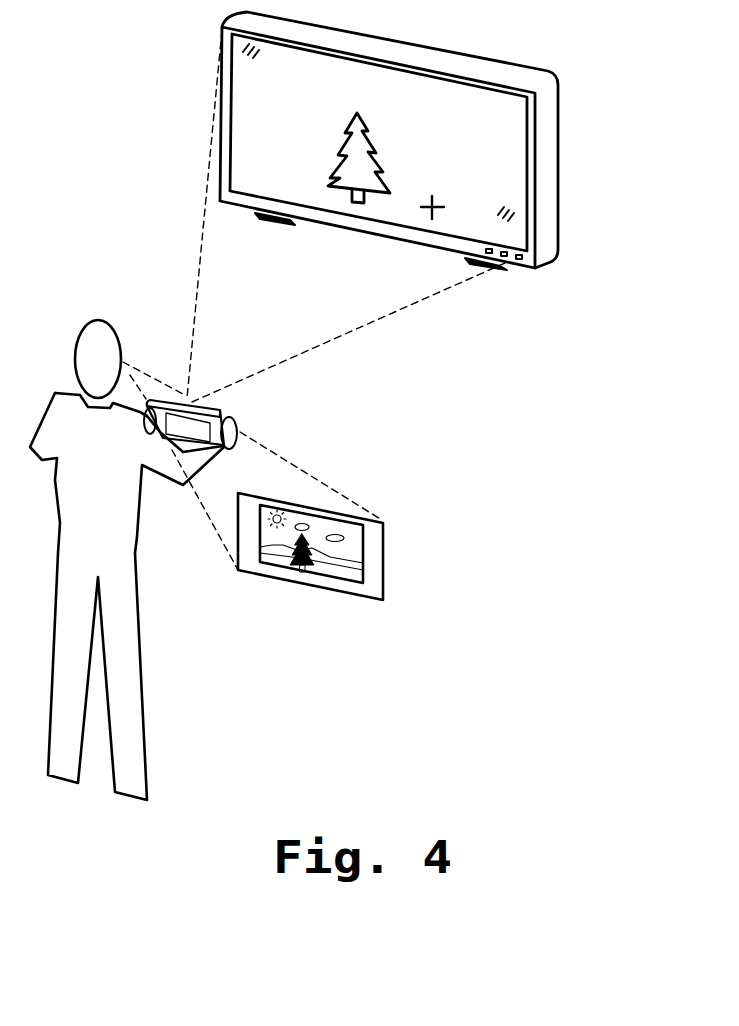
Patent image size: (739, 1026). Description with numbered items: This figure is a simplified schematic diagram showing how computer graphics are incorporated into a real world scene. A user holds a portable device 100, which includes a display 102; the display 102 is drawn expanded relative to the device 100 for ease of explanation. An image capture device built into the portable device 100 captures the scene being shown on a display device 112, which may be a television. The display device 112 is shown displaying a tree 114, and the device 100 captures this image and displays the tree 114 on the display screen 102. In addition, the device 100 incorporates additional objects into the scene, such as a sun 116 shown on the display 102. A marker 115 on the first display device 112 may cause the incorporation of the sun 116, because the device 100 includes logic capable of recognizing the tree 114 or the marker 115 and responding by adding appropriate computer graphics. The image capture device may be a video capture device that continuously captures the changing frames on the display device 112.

The portable device 100 is at (222, 414).
The display 102 is at (387, 550).
The display device 112 is at (550, 149).
The tree 114 is at (367, 127).
The marker 115 is at (433, 219).
The sun 116 is at (282, 513).